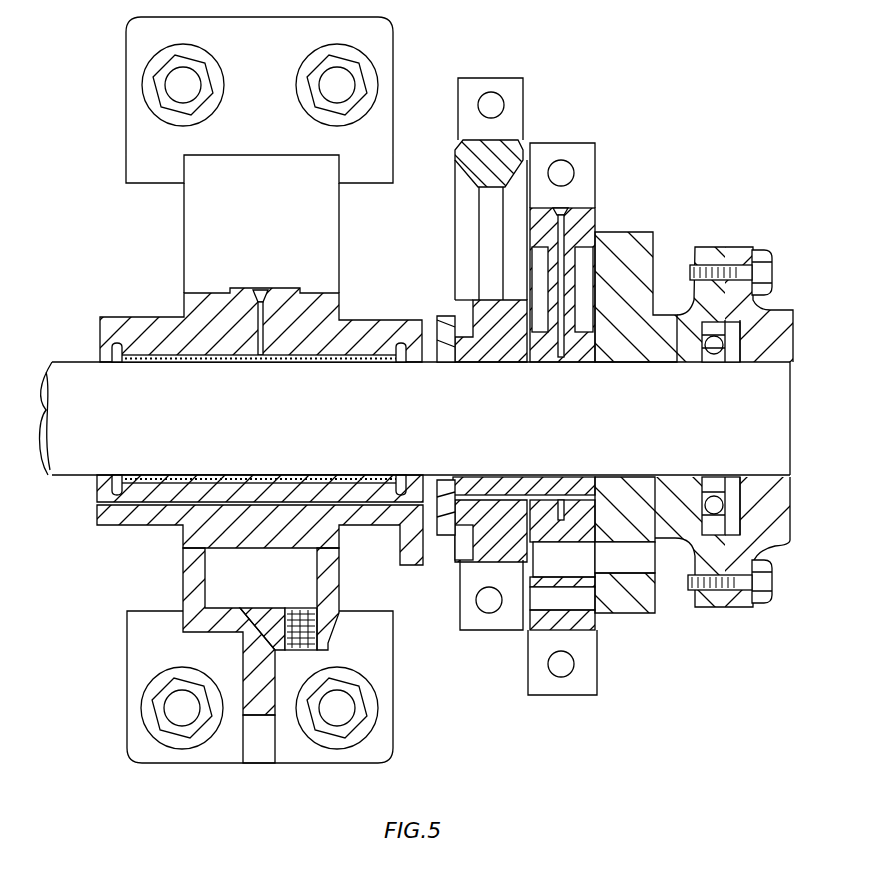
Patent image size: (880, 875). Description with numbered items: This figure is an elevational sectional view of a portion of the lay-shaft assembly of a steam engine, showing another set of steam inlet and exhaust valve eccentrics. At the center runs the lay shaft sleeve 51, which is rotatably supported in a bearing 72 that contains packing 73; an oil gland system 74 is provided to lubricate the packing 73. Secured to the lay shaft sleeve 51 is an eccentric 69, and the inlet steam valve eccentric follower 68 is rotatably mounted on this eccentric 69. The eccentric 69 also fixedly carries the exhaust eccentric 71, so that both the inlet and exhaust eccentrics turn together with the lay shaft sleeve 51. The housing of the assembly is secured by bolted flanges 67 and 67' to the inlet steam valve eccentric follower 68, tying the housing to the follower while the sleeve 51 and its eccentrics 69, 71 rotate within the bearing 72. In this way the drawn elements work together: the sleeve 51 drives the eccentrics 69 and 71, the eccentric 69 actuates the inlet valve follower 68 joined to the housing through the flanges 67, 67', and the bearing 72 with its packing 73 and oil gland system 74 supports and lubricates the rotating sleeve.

The lay shaft sleeve 51 is at (391, 431).
The bolted flange 67 is at (729, 427).
The bolted flange 67' is at (642, 414).
The inlet steam valve eccentric follower 68 is at (585, 216).
The eccentric 69 is at (470, 340).
The exhaust eccentric 71 is at (498, 148).
The bearing 72 is at (139, 325).
The packing 73 is at (155, 355).
The oil gland system 74 is at (113, 354).